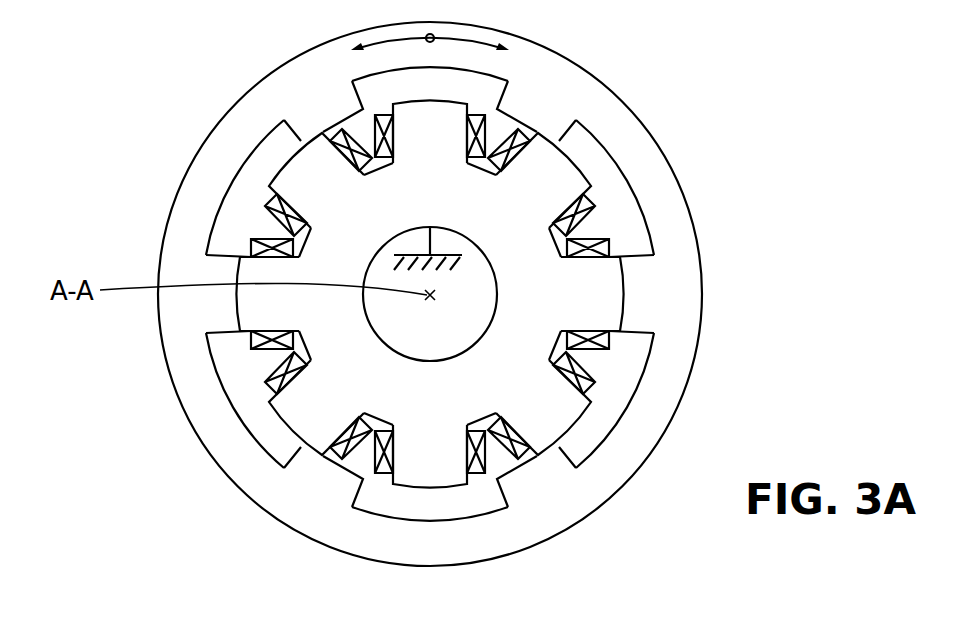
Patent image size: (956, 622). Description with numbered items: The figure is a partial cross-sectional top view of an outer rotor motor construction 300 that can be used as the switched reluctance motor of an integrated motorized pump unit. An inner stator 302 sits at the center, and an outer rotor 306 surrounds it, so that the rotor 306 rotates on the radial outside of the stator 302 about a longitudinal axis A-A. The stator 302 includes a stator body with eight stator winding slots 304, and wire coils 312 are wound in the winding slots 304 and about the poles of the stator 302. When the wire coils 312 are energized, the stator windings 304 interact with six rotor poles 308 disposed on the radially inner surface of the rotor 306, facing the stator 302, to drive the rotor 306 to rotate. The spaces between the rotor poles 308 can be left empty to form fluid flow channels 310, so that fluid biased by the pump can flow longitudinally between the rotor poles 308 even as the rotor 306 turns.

The outer rotor motor construction 300 is at (145, 88).
The inner stator 302 is at (560, 292).
The stator winding slots 304 is at (365, 463).
The outer rotor 306 is at (548, 68).
The rotor poles 308 is at (518, 482).
The fluid flow channel 310 is at (256, 174).
The wire coils 312 is at (600, 330).